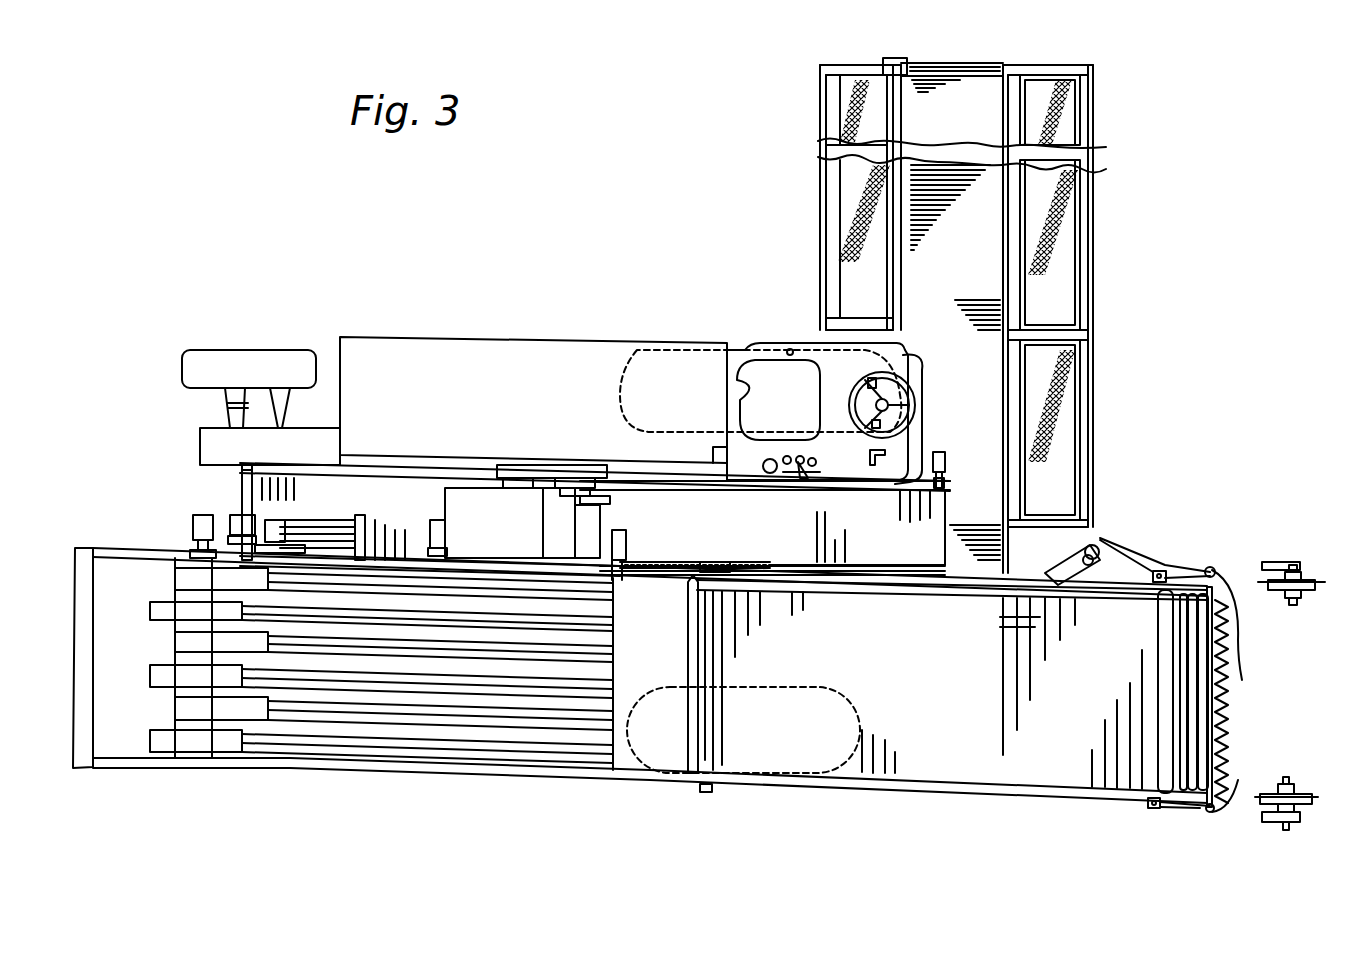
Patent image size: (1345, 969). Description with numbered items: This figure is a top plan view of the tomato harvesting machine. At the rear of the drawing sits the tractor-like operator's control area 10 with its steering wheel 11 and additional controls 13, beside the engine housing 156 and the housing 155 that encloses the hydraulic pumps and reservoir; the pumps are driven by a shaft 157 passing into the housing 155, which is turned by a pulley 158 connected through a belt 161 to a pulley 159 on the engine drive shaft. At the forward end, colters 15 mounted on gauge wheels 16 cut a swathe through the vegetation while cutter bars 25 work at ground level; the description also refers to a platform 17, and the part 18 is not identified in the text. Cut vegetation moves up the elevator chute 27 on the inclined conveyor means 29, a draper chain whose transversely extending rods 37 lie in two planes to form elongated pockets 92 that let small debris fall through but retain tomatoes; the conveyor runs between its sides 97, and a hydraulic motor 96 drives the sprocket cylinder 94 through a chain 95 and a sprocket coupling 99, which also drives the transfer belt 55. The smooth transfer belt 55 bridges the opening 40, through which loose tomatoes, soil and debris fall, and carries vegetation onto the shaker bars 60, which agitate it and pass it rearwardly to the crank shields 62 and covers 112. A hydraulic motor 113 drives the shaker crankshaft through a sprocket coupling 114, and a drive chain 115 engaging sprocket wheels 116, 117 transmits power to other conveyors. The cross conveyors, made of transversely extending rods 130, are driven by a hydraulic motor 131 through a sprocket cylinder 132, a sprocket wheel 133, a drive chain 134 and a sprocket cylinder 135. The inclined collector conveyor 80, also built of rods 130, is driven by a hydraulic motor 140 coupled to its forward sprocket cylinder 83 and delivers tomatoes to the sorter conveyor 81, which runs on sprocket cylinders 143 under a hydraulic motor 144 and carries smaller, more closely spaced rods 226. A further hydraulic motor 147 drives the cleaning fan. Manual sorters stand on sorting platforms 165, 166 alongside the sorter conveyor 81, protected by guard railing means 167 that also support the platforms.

The operator's control area 10 is at (755, 343).
The steering wheel 11 is at (860, 390).
The additional controls 13 is at (790, 458).
The colters 15 is at (1318, 580).
The gauge wheels 16 is at (1272, 593).
The platform 17 is at (1270, 562).
The axle pin 18 is at (1292, 608).
The cutter bars 25 is at (1228, 678).
The elevator chute 27 is at (815, 787).
The inclined conveyor means 29 is at (952, 676).
The rods 37 is at (1022, 690).
The opening 40 is at (688, 627).
The transfer conveyor belt 55 is at (660, 690).
The shaker bars 60 is at (470, 740).
The crank shields 62 is at (145, 672).
The collector conveyor 80 is at (772, 532).
The sorter conveyor 81 is at (920, 145).
The forward sprocket cylinder 83 is at (944, 483).
The elongated pockets 92 is at (1000, 622).
The sprocket cylinder 94 is at (708, 792).
The chain 95 is at (710, 560).
The hydraulic motor 96 is at (626, 540).
The side 97 is at (1027, 580).
The sprocket coupling 99 is at (618, 580).
The covers 112 is at (180, 586).
The hydraulic motor 113 is at (190, 516).
The sprocket coupling 114 is at (188, 550).
The drive chain 115 is at (236, 536).
The sprocket wheel 116 is at (242, 520).
The sprocket wheel 117 is at (285, 548).
The transversely extending rods 130 is at (338, 520).
The hydraulic motor 131 is at (232, 516).
The sprocket cylinder 132 is at (362, 545).
The sprocket wheel 133 is at (256, 535).
The drive chain 134 is at (266, 545).
The sprocket cylinder 135 is at (665, 562).
The hydraulic motor 140 is at (945, 462).
The sprocket cylinders 143 is at (1008, 62).
The hydraulic motor 144 is at (893, 58).
The hydraulic motor 147 is at (430, 527).
The housing 155 is at (430, 532).
The engine housing 156 is at (523, 343).
The shaft 157 is at (515, 490).
The pulley 158 is at (515, 465).
The pulley 159 is at (590, 485).
The belt 161 is at (560, 478).
The sorting platform 165 is at (1075, 258).
The sorting platform 166 is at (855, 200).
The guard railing means 167 is at (1085, 485).
The rods 226 is at (930, 205).